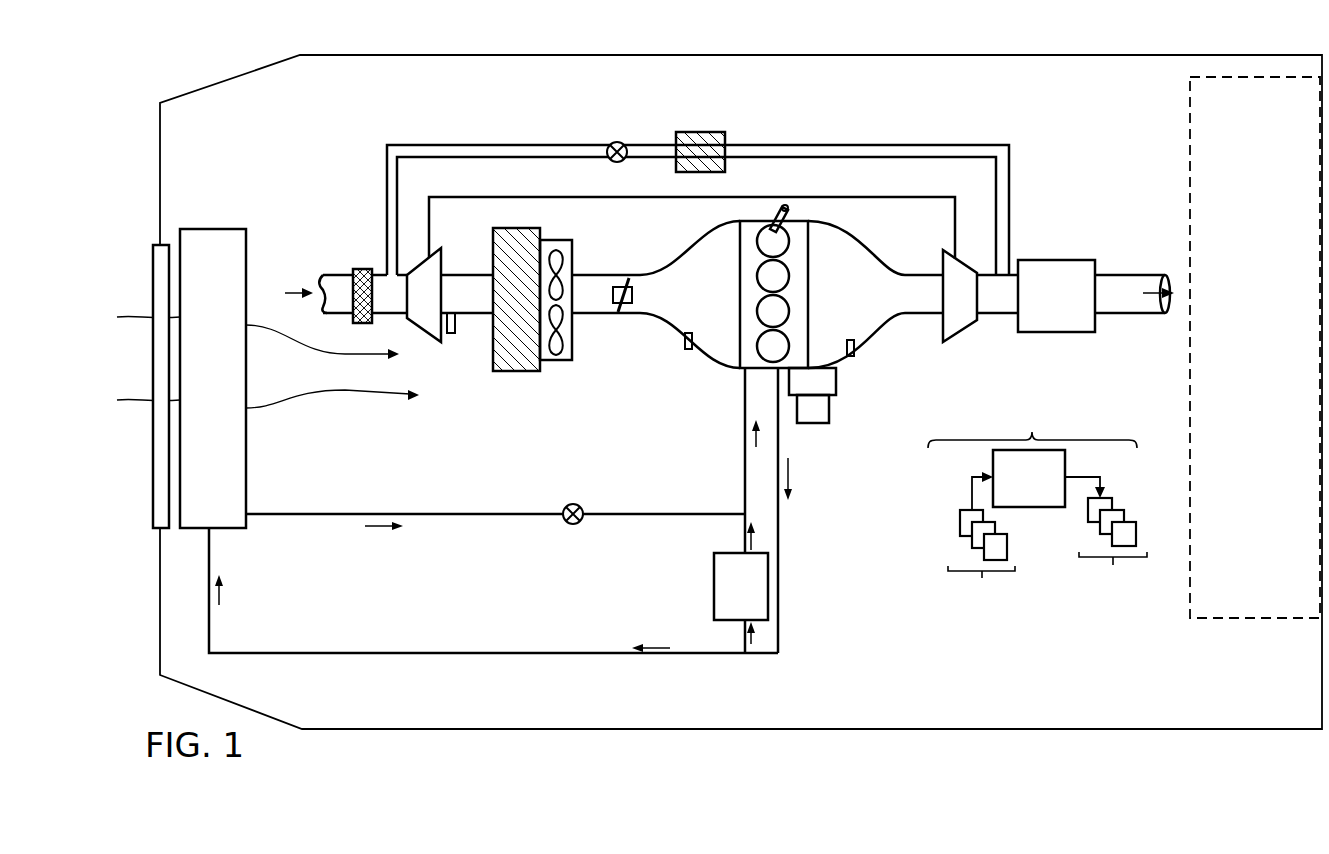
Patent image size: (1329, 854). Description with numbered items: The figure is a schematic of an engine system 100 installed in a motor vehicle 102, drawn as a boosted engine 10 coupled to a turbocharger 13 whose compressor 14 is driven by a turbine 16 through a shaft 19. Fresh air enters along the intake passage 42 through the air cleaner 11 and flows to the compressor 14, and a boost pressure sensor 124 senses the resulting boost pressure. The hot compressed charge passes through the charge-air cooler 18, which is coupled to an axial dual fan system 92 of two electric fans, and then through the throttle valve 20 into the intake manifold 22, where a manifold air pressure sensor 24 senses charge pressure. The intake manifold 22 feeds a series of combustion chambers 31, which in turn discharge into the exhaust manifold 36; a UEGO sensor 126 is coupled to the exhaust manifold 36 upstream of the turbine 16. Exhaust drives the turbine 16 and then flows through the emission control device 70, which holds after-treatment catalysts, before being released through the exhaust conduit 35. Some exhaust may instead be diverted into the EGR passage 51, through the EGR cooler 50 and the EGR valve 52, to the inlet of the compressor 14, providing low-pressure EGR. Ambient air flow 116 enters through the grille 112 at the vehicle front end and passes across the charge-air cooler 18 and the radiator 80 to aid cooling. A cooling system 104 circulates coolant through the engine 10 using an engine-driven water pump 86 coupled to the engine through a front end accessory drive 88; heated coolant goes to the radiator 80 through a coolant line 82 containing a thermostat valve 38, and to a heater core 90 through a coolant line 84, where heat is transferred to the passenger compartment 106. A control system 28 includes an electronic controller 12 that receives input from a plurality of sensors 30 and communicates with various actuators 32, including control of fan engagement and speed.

The motor vehicle 102 is at (713, 55).
The engine system 100 is at (1090, 101).
The passenger compartment 106 is at (1255, 347).
The grille 112 is at (152, 425).
The ambient air flow 116 is at (131, 318).
The radiator 80 is at (213, 378).
The air cleaner 11 is at (358, 269).
The intake passage 42 is at (358, 323).
The compressor 14 is at (424, 295).
The turbocharger 13 is at (456, 231).
The boost pressure sensor 124 is at (452, 333).
The charge-air cooler 18 is at (519, 228).
The axial dual fan system 92 is at (573, 349).
The throttle valve 20 is at (632, 296).
The intake manifold 22 is at (690, 294).
The engine 10 is at (808, 283).
The combustion chambers 31 is at (788, 233).
The manifold air pressure sensor 24 is at (685, 340).
The exhaust manifold 36 is at (875, 294).
The UEGO sensor 126 is at (854, 345).
The turbine 16 is at (960, 296).
The shaft 19 is at (880, 200).
The EGR passage 51 is at (800, 145).
The EGR cooler 50 is at (708, 132).
The EGR valve 52 is at (626, 142).
The emission control device 70 is at (1048, 260).
The exhaust conduit 35 is at (1150, 273).
The coolant line 82 is at (662, 514).
The thermostat valve 38 is at (575, 525).
The coolant line 84 is at (746, 538).
The heater core 90 is at (741, 586).
The front end accessory drive 88 is at (836, 375).
The engine-driven water pump 86 is at (829, 415).
The cooling system 104 is at (823, 577).
The control system 28 is at (1032, 416).
The controller 12 is at (1029, 478).
The sensors 30 is at (984, 547).
The actuators 32 is at (1113, 543).